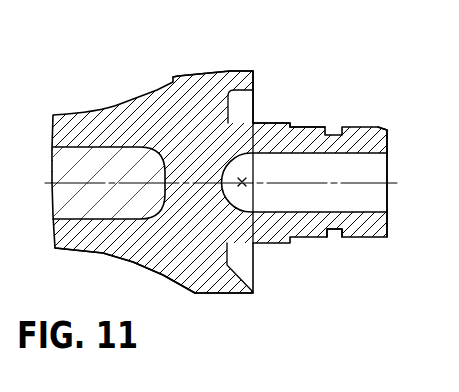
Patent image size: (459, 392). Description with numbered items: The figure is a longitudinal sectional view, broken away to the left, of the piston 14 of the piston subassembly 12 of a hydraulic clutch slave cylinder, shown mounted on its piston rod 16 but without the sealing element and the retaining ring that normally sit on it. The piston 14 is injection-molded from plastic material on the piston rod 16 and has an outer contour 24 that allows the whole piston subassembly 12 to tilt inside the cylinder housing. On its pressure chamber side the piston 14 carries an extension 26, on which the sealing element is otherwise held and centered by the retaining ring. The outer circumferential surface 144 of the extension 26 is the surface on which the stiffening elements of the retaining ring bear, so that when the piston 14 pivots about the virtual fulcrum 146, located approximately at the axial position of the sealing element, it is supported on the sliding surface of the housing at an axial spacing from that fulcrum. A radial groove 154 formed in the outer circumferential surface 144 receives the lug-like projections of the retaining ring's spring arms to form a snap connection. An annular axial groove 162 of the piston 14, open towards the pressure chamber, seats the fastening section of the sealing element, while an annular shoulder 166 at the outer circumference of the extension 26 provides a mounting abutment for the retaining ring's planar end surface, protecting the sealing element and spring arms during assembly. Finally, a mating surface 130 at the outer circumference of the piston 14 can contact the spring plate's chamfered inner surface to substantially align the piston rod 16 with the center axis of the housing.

The piston subassembly 12 is at (67, 105).
The piston 14 is at (130, 257).
The piston rod 16 is at (73, 194).
The outer contour 24 is at (209, 64).
The extension 26 is at (392, 125).
The mating surface 130 is at (201, 295).
The outer circumferential surface 144 is at (313, 127).
The virtual fulcrum 146 is at (257, 189).
The radial groove 154 is at (333, 231).
The annular axial groove 162 is at (256, 77).
The annular shoulder 166 is at (292, 123).